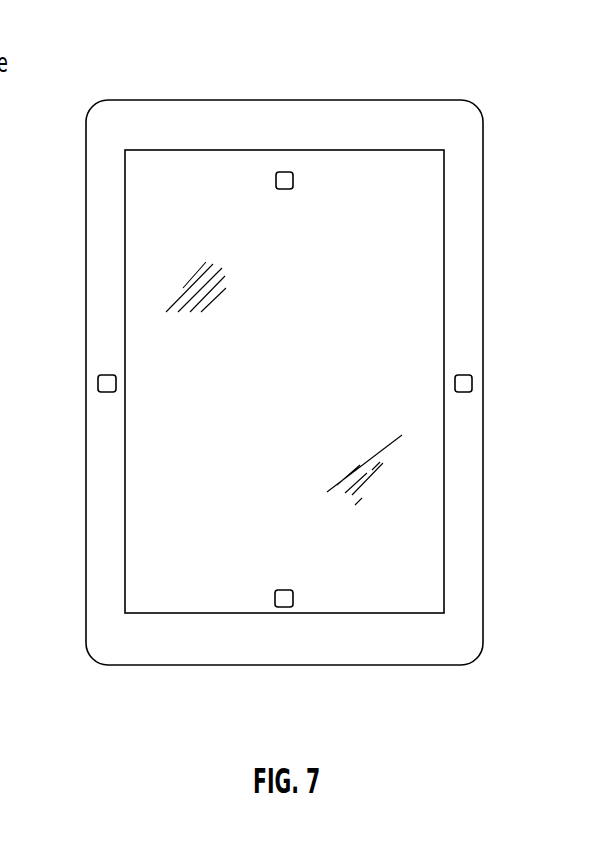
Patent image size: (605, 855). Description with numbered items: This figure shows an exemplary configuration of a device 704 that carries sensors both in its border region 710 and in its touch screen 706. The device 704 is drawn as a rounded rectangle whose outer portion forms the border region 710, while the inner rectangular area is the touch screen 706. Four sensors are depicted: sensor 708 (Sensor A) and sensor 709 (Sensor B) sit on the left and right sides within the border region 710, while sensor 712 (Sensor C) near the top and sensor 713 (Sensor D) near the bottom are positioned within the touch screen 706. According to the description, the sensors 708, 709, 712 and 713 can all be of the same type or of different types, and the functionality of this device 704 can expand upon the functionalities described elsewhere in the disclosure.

The device 704 is at (437, 77).
The touch screen 706 is at (147, 521).
The sensor 708 is at (108, 374).
The sensor 709 is at (463, 375).
The border region 710 is at (253, 637).
The sensor 712 is at (285, 190).
The sensor 713 is at (283, 589).